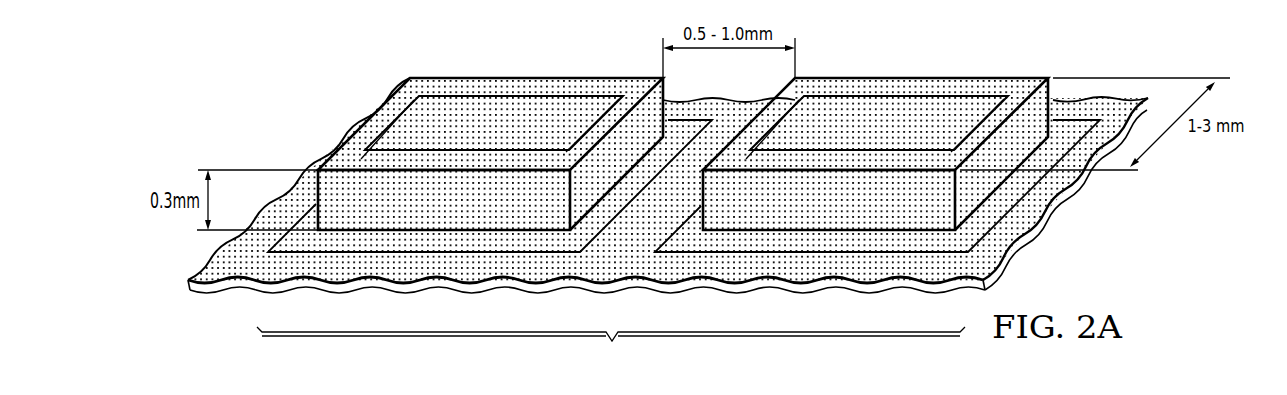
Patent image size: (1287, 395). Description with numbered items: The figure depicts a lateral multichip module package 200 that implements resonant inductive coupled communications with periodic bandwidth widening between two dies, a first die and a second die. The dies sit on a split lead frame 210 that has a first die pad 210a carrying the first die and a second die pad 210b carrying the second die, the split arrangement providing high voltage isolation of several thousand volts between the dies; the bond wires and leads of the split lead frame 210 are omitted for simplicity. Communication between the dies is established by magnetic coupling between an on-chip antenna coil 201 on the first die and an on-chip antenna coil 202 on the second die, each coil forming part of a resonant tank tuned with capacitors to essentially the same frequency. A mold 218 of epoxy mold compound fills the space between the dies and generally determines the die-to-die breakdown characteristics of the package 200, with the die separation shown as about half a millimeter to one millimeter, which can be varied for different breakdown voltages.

The lateral MCM package 200 is at (360, 64).
The antenna coil 201 is at (515, 92).
The antenna coil 202 is at (900, 92).
The split lead frame 210 is at (611, 361).
The first die pad 210a is at (403, 242).
The second die pad 210b is at (845, 242).
The mold 218 is at (250, 260).